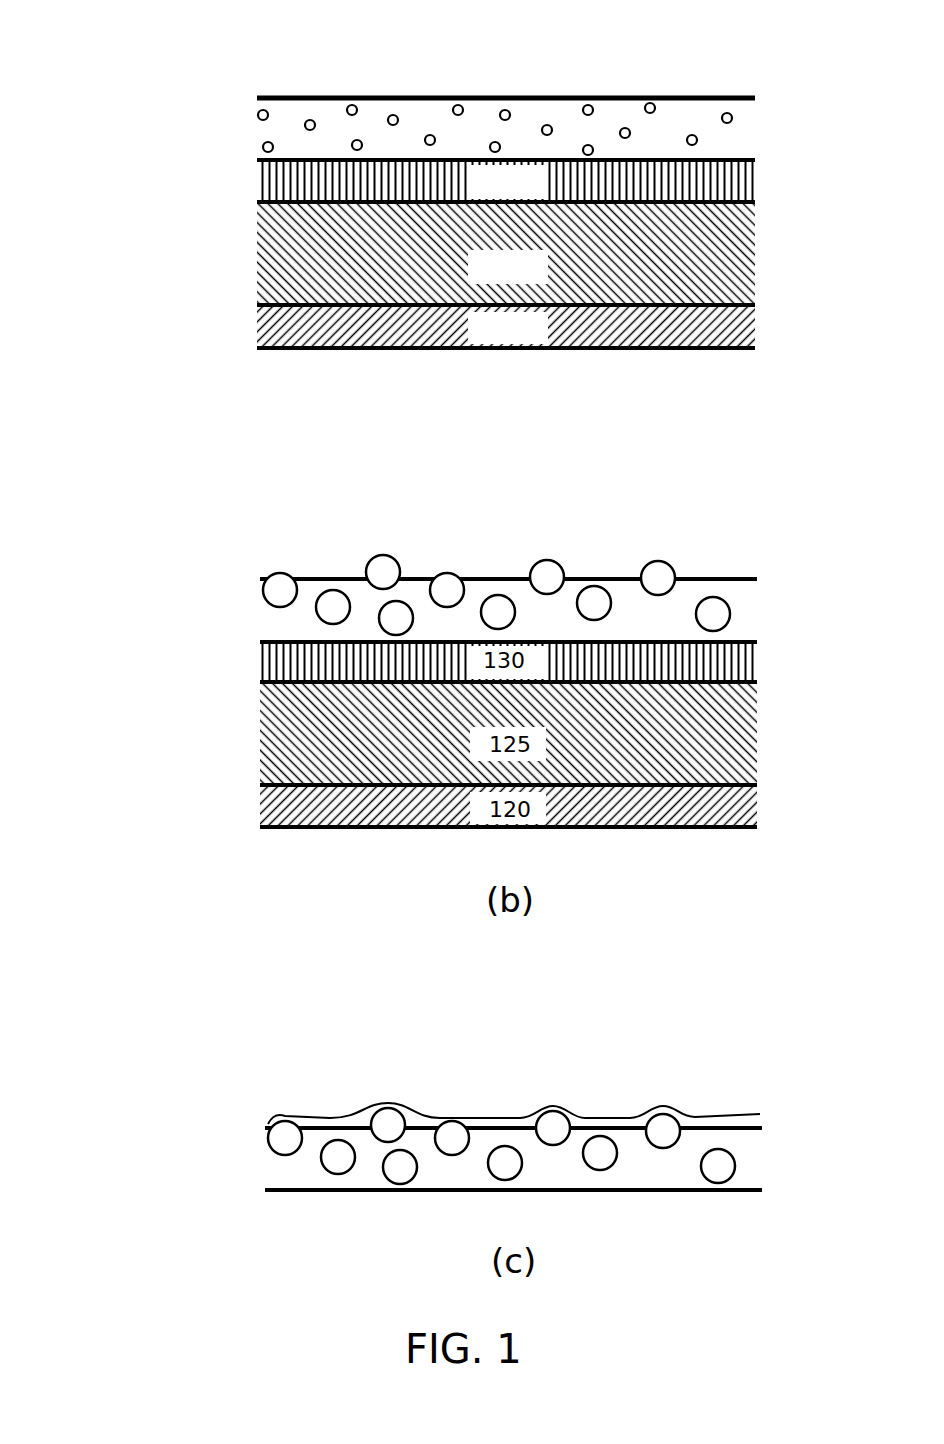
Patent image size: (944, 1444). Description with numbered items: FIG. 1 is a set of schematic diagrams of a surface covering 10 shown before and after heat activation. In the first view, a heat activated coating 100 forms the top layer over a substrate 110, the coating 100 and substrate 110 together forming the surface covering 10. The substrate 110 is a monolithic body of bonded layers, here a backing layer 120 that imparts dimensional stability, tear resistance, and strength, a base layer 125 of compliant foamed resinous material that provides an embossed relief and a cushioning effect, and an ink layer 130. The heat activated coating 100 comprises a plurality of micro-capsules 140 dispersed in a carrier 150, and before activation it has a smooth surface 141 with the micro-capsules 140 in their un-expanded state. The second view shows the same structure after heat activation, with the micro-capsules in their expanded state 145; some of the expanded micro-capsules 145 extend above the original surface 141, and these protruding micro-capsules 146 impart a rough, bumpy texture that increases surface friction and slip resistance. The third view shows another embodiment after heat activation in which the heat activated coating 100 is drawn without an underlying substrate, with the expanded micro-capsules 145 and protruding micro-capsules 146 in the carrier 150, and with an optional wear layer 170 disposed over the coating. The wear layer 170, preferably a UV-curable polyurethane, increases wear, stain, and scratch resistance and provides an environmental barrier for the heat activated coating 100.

The surface covering 10 is at (124, 43).
The heat activated coating 100 is at (452, 89).
The substrate 110 is at (397, 254).
The backing layer 120 is at (506, 326).
The base layer 125 is at (506, 253).
The ink layer 130 is at (506, 181).
The micro-capsules 140 is at (624, 128).
The smooth surface 141 is at (725, 98).
The expanded micro-capsules 145 is at (706, 598).
The protruding micro-capsules 146 is at (391, 556).
The carrier 150 is at (743, 128).
The wear layer 170 is at (755, 1118).